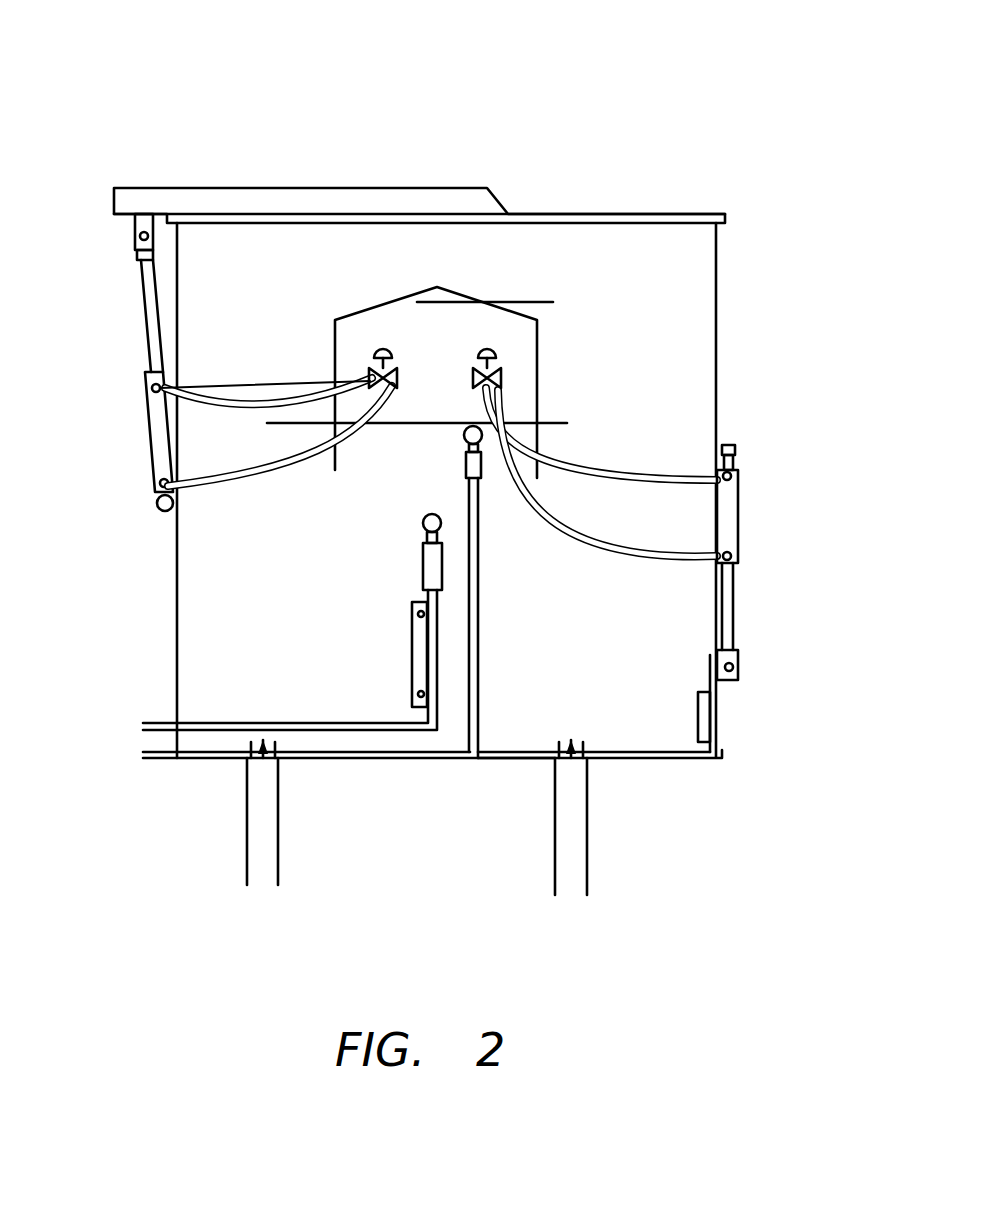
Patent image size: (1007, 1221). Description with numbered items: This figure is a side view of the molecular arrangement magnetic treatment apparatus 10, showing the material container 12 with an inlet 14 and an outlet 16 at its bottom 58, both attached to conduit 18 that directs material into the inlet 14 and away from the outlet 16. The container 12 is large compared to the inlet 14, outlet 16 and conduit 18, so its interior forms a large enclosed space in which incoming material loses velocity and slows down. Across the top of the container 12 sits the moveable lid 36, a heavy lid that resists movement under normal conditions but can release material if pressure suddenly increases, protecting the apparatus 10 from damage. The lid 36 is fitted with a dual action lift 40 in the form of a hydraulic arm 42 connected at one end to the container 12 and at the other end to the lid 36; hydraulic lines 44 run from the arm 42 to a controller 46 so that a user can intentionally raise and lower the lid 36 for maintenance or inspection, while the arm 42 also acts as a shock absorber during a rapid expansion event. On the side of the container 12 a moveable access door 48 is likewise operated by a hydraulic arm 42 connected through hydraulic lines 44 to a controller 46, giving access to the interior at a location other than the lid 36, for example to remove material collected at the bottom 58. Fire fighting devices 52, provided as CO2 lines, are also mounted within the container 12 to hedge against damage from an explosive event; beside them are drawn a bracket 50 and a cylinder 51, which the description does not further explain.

The molecular arrangement magnetic treatment apparatus 10 is at (748, 54).
The material container 12 is at (695, 309).
The inlet 14 is at (578, 768).
The outlet 16 is at (255, 763).
The conduit 18 is at (247, 853).
The moveable lid 36 is at (270, 187).
The dual action lift 40 is at (108, 443).
The hydraulic arm 42 is at (148, 404).
The hydraulic lines 44 is at (203, 398).
The controller 46 is at (381, 343).
The moveable access door 48 is at (738, 510).
The bracket 50 is at (400, 655).
The cylinder 51 is at (425, 565).
The fire fighting devices 52 is at (485, 628).
The bottom 58 is at (495, 762).